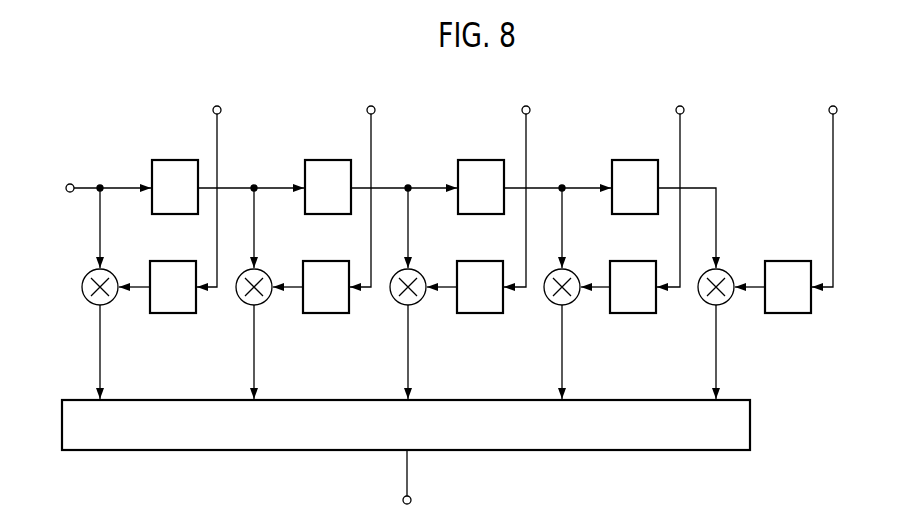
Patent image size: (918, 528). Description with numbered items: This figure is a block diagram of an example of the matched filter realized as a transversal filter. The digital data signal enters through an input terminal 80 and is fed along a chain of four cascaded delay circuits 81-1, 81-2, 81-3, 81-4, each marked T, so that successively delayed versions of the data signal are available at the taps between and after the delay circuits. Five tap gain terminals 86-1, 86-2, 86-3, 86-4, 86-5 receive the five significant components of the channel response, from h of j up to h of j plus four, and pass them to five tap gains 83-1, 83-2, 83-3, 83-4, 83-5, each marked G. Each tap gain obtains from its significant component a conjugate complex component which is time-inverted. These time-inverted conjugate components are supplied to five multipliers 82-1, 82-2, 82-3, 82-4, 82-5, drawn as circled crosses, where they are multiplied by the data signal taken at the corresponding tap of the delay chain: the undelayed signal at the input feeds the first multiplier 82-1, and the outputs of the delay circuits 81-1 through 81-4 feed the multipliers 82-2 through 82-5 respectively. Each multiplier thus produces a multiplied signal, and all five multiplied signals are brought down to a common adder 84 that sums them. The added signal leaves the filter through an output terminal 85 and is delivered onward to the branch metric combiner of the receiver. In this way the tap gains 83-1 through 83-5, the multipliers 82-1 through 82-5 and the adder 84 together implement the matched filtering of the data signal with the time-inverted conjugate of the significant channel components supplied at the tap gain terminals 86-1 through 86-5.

The input terminal 80 is at (81, 235).
The delay circuit 81-1 is at (149, 164).
The delay circuit 81-2 is at (302, 164).
The delay circuit 81-3 is at (455, 164).
The delay circuit 81-4 is at (609, 164).
The multiplier 82-1 is at (90, 302).
The multiplier 82-2 is at (244, 302).
The multiplier 82-3 is at (396, 302).
The multiplier 82-4 is at (550, 302).
The multiplier 82-5 is at (702, 302).
The tap gain 83-1 is at (164, 315).
The tap gain 83-2 is at (318, 315).
The tap gain 83-3 is at (472, 315).
The tap gain 83-4 is at (625, 315).
The tap gain 83-5 is at (780, 315).
The adder 84 is at (752, 420).
The output terminal 85 is at (411, 498).
The tap gain terminal 86-1 is at (213, 111).
The tap gain terminal 86-2 is at (367, 111).
The tap gain terminal 86-3 is at (522, 111).
The tap gain terminal 86-4 is at (676, 111).
The tap gain terminal 86-5 is at (829, 111).